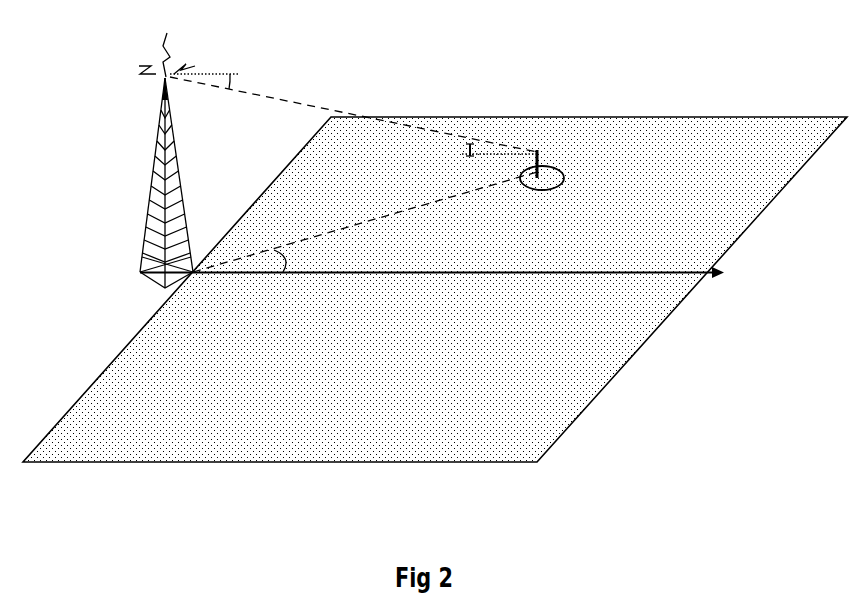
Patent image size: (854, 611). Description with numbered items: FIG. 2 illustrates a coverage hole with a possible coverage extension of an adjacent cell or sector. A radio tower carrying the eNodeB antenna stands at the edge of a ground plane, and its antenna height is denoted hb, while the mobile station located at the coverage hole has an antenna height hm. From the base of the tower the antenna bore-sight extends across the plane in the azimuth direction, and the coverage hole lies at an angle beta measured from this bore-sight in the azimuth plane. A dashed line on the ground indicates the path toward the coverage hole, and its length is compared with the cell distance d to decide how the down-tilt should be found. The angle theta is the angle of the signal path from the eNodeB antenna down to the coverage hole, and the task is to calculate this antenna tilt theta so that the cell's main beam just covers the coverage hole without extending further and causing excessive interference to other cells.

The eNodeB antenna height hb is at (166, 170).
The mobile station antenna height hm is at (513, 167).
The distance d is at (365, 222).
The angle from the antenna bore-sight beta is at (271, 261).
The antenna tilt angle theta is at (353, 113).
The antenna bore-sight is at (432, 263).